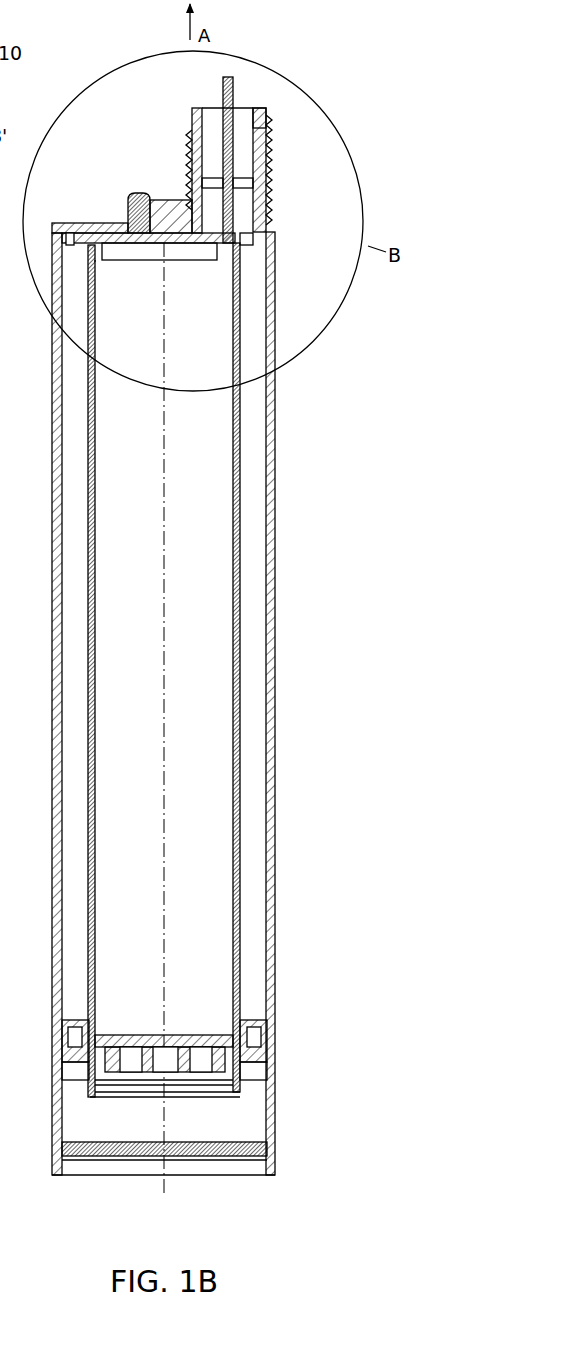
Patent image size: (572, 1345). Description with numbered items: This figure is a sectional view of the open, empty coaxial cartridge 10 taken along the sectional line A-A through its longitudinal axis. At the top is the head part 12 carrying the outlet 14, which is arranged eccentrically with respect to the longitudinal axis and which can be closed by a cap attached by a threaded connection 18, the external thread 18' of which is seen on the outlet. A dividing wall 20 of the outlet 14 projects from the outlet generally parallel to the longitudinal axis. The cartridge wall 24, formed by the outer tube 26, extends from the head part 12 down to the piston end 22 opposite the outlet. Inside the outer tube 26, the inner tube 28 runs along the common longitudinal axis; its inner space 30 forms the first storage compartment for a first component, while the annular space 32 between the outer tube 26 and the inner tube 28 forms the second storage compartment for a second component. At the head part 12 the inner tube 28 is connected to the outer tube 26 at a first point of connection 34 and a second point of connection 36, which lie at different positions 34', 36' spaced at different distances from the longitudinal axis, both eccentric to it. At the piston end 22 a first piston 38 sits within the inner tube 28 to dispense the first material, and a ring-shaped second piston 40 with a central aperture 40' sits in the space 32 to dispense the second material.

The coaxial cartridge 10 is at (242, 735).
The head part 12 is at (152, 199).
The outlet 14 is at (304, 132).
The threaded connection 18 is at (304, 170).
The external thread 18' is at (304, 170).
The dividing wall 20 is at (228, 80).
The piston end 22 is at (250, 1158).
The cartridge wall 24 is at (204, 703).
The outer tube 26 is at (270, 597).
The inner tube 28 is at (236, 533).
The inner space 30 is at (122, 481).
The space 32 is at (157, 671).
The first point of connection 34 is at (323, 95).
The first position 34' is at (323, 95).
The second point of connection 36 is at (149, 185).
The second position 36' is at (149, 185).
The first piston 38 is at (218, 1037).
The second piston 40 is at (288, 1050).
The aperture 40' is at (148, 1129).